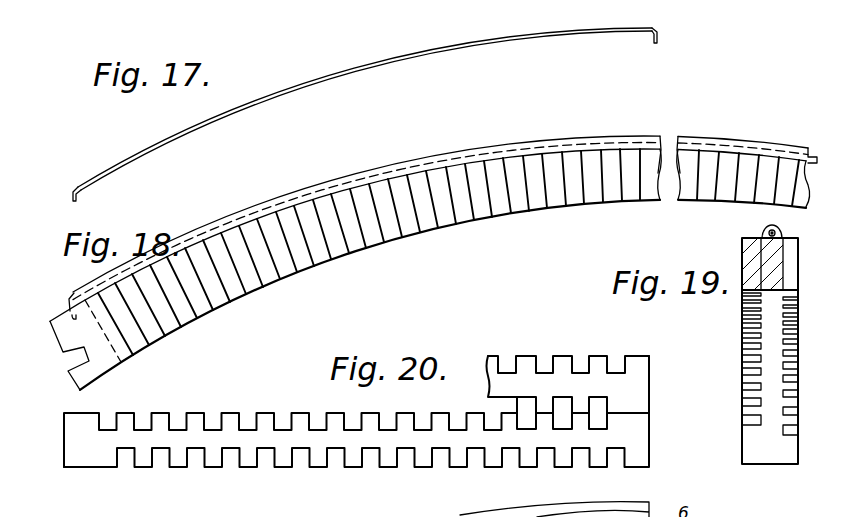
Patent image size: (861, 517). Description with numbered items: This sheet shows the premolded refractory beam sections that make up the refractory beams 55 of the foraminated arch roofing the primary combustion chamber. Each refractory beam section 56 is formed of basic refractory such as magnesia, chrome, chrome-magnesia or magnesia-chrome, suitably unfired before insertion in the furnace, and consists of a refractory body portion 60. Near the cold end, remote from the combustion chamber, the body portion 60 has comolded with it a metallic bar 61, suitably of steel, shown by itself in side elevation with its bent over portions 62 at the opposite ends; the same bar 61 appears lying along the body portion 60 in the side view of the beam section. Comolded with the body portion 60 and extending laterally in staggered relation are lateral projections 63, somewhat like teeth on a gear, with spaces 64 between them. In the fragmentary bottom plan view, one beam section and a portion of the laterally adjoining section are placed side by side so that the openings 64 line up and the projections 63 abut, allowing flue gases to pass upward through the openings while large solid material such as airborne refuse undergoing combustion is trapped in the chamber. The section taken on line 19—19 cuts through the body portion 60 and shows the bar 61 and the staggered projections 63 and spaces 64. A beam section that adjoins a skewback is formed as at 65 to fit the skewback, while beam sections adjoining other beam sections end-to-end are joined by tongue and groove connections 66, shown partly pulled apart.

In FIG. 18, the section line 19 is at (457, 162).
In FIG. 18, the refractory beam 55 is at (594, 134).
In FIG. 18, the refractory beam section 56 is at (374, 195).
In FIG. 18, the refractory body portion 60 is at (340, 247).
In FIG. 20, the refractory body portion 60 is at (335, 437).
In FIG. 17, the metallic bar 61 is at (359, 65).
In FIG. 18, the metallic bar 61 is at (338, 196).
In FIG. 19, the metallic bar 61 is at (766, 233).
In FIG. 17, the bent over portions 62 is at (72, 193).
In FIG. 18, the bent over portions 62 is at (72, 306).
In FIG. 18, the lateral projections 63 is at (218, 295).
In FIG. 19, the lateral projections 63 is at (742, 353).
In FIG. 20, the lateral projections 63 is at (229, 421).
In FIG. 18, the spaces 64 is at (167, 322).
In FIG. 19, the spaces 64 is at (742, 327).
In FIG. 20, the spaces 64 is at (212, 428).
In FIG. 18, the skewback-fitting end formation 65 is at (78, 357).
In FIG. 19, the skewback-fitting end formation 65 is at (770, 451).
In FIG. 18, the tongue and groove connections 66 is at (677, 173).